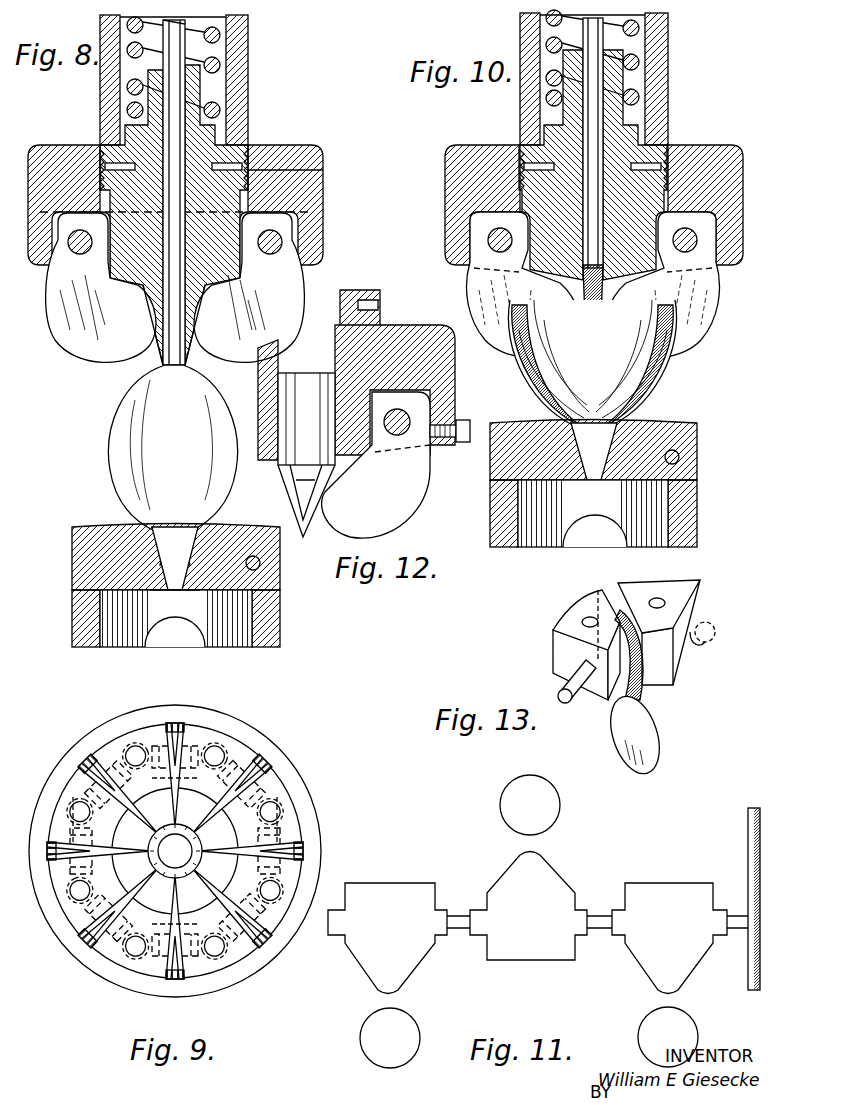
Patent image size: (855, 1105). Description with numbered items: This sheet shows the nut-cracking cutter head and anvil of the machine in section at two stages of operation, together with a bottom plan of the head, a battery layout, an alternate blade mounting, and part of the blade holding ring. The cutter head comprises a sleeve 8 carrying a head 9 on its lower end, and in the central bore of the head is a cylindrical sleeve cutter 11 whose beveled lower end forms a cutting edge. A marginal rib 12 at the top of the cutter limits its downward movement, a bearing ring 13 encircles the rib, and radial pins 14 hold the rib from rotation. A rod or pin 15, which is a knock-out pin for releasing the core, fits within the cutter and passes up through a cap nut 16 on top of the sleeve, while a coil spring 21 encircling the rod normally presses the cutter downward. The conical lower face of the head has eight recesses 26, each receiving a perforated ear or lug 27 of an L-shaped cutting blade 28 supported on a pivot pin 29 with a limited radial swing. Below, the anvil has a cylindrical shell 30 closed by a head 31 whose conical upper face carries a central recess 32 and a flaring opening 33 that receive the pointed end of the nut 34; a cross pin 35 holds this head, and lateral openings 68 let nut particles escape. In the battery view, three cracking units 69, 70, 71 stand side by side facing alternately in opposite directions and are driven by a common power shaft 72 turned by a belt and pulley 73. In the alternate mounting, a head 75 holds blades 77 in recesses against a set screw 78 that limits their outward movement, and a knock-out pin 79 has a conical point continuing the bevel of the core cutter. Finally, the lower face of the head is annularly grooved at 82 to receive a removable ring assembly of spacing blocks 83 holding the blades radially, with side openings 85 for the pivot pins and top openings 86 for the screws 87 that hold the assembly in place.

In FIG. 8, the sleeve 8 is at (246, 60).
In FIG. 8, the head 9 is at (315, 172).
In FIG. 10, the head 9 is at (595, 177).
In FIG. 9, the head 9 is at (302, 786).
In FIG. 8, the sleeve cutter 11 is at (158, 300).
In FIG. 9, the sleeve cutter 11 is at (180, 830).
In FIG. 8, the marginal rib 12 is at (225, 120).
In FIG. 10, the marginal rib 12 is at (593, 146).
In FIG. 8, the bearing ring 13 is at (120, 145).
In FIG. 8, the radial pins 14 is at (242, 126).
In FIG. 8, the rod or pin 15 is at (185, 30).
In FIG. 10, the rod or pin 15 is at (648, 223).
In FIG. 9, the rod or pin 15 is at (175, 851).
In FIG. 12, the cap nut 16 is at (452, 372).
In FIG. 8, the coil spring 21 is at (222, 68).
In FIG. 10, the coil spring 21 is at (629, 58).
In FIG. 8, the recesses 26 is at (298, 222).
In FIG. 10, the recesses 26 is at (624, 201).
In FIG. 9, the recesses 26 is at (222, 728).
In FIG. 10, the perforated ear or lug 27 is at (627, 229).
In FIG. 13, the perforated ear or lug 27 is at (615, 592).
In FIG. 8, the cutting blade 28 is at (290, 315).
In FIG. 10, the cutting blade 28 is at (612, 285).
In FIG. 13, the cutting blade 28 is at (620, 742).
In FIG. 9, the cutting blade 28 is at (178, 722).
In FIG. 10, the pivot pins 29 is at (625, 261).
In FIG. 13, the pivot pins 29 is at (560, 668).
In FIG. 9, the pivot pins 29 is at (290, 830).
In FIG. 8, the cylindrical shell 30 is at (72, 603).
In FIG. 10, the cylindrical shell 30 is at (621, 512).
In FIG. 8, the head 31 is at (98, 527).
In FIG. 10, the head 31 is at (610, 437).
In FIG. 8, the central recess 32 is at (160, 535).
In FIG. 10, the central recess 32 is at (637, 417).
In FIG. 8, the flaring opening 33 is at (180, 585).
In FIG. 8, the nut 34 is at (112, 422).
In FIG. 10, the nut 34 is at (620, 365).
In FIG. 8, the cross pin 35 is at (255, 557).
In FIG. 10, the cross pin 35 is at (708, 448).
In FIG. 10, the lateral openings 68 is at (595, 531).
In FIG. 11, the cracking unit 69 is at (400, 890).
In FIG. 11, the cracking unit 70 is at (548, 878).
In FIG. 11, the cracking unit 71 is at (655, 888).
In FIG. 11, the common power shaft 72 is at (460, 930).
In FIG. 11, the belt and pulley 73 is at (748, 855).
In FIG. 12, the head 75 is at (405, 325).
In FIG. 12, the blades 77 is at (415, 495).
In FIG. 12, the set screw 78 is at (458, 420).
In FIG. 12, the knock-out pin 79 is at (310, 525).
In FIG. 9, the annular groove 82 is at (128, 728).
In FIG. 13, the spacing blocks 83 is at (680, 588).
In FIG. 13, the openings 85 is at (560, 645).
In FIG. 9, the openings 85 is at (228, 760).
In FIG. 13, the openings 86 is at (657, 600).
In FIG. 8, the screws 87 is at (290, 152).
In FIG. 9, the screws 87 is at (78, 805).